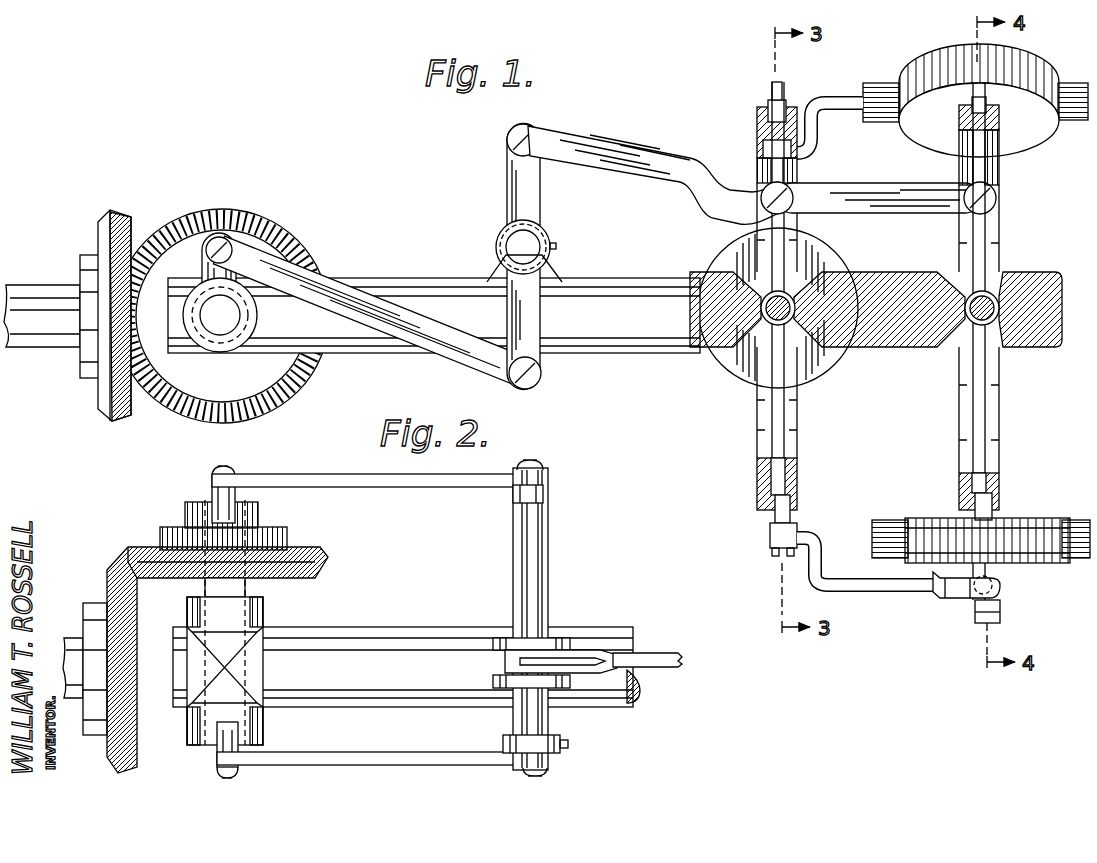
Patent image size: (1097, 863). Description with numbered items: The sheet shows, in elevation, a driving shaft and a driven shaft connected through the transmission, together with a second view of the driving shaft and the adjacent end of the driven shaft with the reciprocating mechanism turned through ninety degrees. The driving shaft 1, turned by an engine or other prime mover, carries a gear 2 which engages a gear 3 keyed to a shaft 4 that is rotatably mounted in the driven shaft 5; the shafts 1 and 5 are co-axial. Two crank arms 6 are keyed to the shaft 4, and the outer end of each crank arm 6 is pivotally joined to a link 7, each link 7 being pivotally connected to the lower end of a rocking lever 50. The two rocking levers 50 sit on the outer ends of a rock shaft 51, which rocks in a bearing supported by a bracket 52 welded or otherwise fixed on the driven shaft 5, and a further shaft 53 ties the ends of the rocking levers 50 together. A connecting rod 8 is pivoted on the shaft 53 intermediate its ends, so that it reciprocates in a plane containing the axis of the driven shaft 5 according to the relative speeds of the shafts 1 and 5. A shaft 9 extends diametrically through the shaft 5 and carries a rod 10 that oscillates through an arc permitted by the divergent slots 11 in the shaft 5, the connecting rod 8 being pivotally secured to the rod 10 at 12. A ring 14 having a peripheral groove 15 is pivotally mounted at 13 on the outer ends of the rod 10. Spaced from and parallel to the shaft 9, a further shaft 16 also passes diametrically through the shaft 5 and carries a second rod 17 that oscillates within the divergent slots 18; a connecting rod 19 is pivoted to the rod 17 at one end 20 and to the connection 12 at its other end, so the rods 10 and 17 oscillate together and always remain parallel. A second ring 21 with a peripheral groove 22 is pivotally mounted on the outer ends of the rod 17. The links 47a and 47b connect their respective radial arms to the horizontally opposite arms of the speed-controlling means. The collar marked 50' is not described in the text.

In FIG. 1, the driving shaft 1 is at (52, 292).
In FIG. 2, the driving shaft 1 is at (70, 640).
In FIG. 1, the gear 2 is at (122, 410).
In FIG. 1, the gear 3 is at (173, 412).
In FIG. 1, the shaft 4 is at (224, 325).
In FIG. 2, the shaft 4 is at (240, 590).
In FIG. 1, the driven shaft 5 is at (411, 278).
In FIG. 2, the driven shaft 5 is at (407, 627).
In FIG. 1, the crank arm 6 is at (206, 262).
In FIG. 2, the crank arm 6 is at (212, 497).
In FIG. 2, the link 7 is at (340, 488).
In FIG. 1, the connecting rod 8 is at (628, 158).
In FIG. 2, the connecting rod 8 is at (665, 653).
In FIG. 1, the shaft 9 is at (768, 323).
In FIG. 1, the rod 10 is at (772, 418).
In FIG. 1, the divergent slots 11 is at (808, 270).
In FIG. 1, the pivotal connection 12 is at (790, 196).
In FIG. 1, the pivotal mounting 13 is at (762, 150).
In FIG. 1, the ring 14 is at (762, 490).
In FIG. 1, the peripheral groove 15 is at (797, 519).
In FIG. 1, the shaft 16 is at (946, 345).
In FIG. 1, the second rod 17 is at (978, 421).
In FIG. 1, the divergent slots 18 is at (1010, 276).
In FIG. 1, the connecting rod 19 is at (882, 211).
In FIG. 1, the pivotal connection 20 is at (997, 197).
In FIG. 1, the second ring 21 is at (1003, 498).
In FIG. 1, the peripheral groove 22 is at (1000, 512).
In FIG. 1, the link 47a is at (838, 100).
In FIG. 1, the link 47b is at (888, 593).
In FIG. 1, the rocking lever 50 is at (550, 373).
In FIG. 2, the rocking lever 50 is at (554, 730).
In FIG. 2, the collar 50' is at (553, 496).
In FIG. 1, the rock shaft 51 is at (530, 241).
In FIG. 1, the bracket 52 is at (553, 275).
In FIG. 2, the bracket 52 is at (560, 638).
In FIG. 1, the shaft 53 is at (506, 140).
In FIG. 2, the shaft 53 is at (548, 561).